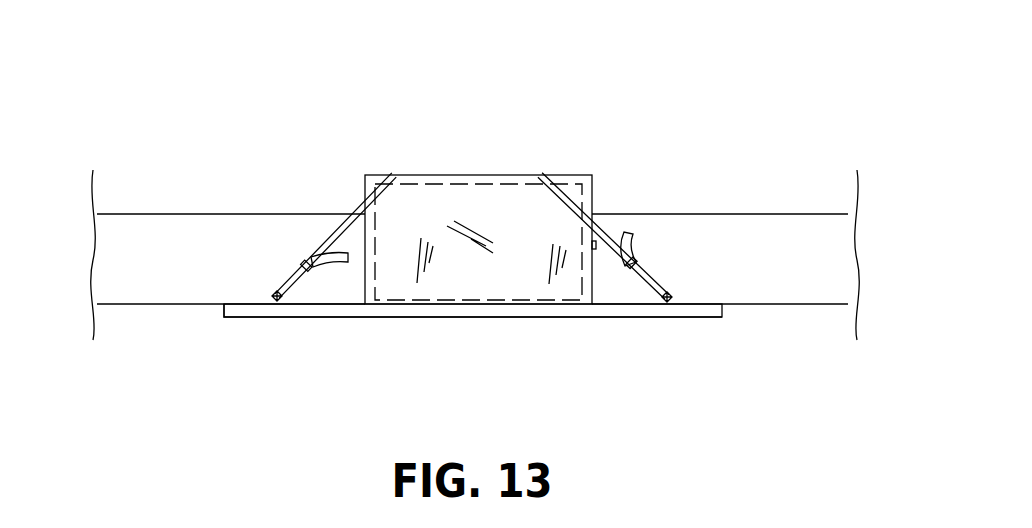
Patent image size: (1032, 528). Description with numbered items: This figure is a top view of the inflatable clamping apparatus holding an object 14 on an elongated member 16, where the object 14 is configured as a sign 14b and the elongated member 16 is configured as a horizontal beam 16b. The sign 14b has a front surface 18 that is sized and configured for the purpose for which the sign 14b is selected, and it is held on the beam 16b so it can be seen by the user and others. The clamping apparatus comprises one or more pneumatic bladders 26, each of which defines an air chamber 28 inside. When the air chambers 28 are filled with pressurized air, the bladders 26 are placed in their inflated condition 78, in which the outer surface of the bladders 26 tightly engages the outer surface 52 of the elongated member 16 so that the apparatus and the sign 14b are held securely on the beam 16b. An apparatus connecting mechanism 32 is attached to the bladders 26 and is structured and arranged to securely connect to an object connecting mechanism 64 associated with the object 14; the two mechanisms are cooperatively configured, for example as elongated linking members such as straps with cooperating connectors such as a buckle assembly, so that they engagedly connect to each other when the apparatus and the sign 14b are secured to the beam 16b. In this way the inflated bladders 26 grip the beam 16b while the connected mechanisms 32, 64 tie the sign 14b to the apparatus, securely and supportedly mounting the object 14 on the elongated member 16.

The object 14 is at (641, 318).
The sign 14b is at (302, 312).
The elongated member 16 is at (142, 305).
The horizontal beam 16b is at (772, 242).
The front surface 18 is at (534, 318).
The pneumatic bladder 26 is at (498, 172).
The air chamber 28 is at (396, 288).
The apparatus connecting mechanism 32 is at (338, 228).
The outer surface 52 is at (800, 267).
The object connecting mechanism 64 is at (285, 278).
The inflated condition 78 is at (440, 157).